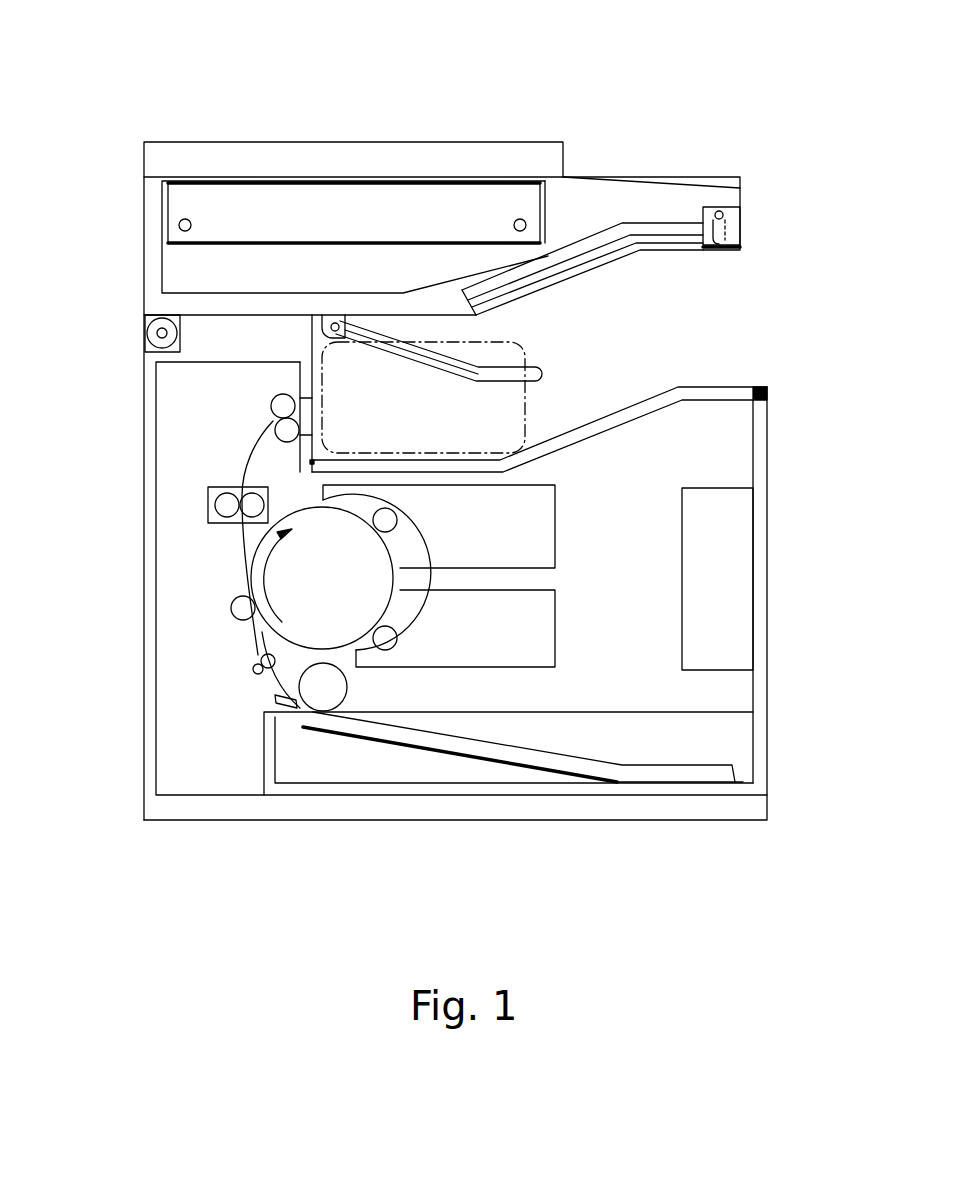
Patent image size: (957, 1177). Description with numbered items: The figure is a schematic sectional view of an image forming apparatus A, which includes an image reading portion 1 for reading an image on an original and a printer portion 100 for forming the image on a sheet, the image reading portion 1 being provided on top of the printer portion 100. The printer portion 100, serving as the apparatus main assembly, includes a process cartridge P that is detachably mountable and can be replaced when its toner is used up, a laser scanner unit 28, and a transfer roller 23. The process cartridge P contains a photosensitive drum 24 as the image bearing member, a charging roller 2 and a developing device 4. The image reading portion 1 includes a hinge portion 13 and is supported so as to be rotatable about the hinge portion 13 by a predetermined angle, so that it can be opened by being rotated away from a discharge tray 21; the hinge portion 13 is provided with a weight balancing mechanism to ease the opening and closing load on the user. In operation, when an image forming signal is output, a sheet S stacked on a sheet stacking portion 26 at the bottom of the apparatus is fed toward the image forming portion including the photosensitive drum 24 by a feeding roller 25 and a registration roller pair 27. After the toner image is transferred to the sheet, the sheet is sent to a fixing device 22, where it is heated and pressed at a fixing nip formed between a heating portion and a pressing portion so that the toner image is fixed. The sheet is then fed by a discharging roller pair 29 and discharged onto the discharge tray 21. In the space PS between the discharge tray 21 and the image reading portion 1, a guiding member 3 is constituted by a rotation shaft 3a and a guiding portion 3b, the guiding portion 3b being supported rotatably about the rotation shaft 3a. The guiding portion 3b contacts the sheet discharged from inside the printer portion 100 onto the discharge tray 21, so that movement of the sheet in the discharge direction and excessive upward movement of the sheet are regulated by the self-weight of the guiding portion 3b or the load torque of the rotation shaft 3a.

The image forming apparatus A is at (229, 112).
The image reading portion 1 is at (143, 220).
The guiding member 3 is at (432, 204).
The rotation shaft 3a is at (341, 325).
The guiding portion 3b is at (413, 353).
The hinge portion 13 is at (150, 333).
The space PS is at (484, 343).
The discharge tray 21 is at (597, 420).
The process cartridge P is at (578, 487).
The charging roller 2 is at (389, 520).
The photosensitive drum 24 is at (372, 592).
The developing device 4 is at (555, 652).
The laser scanner unit 28 is at (735, 541).
The discharging roller pair 29 is at (273, 399).
The fixing device 22 is at (208, 505).
The transfer roller 23 is at (240, 607).
The registration roller pair 27 is at (257, 667).
The feeding roller 25 is at (310, 683).
The sheet stacking portion 26 is at (367, 765).
The sheet S is at (482, 748).
The printer portion 100 is at (767, 677).